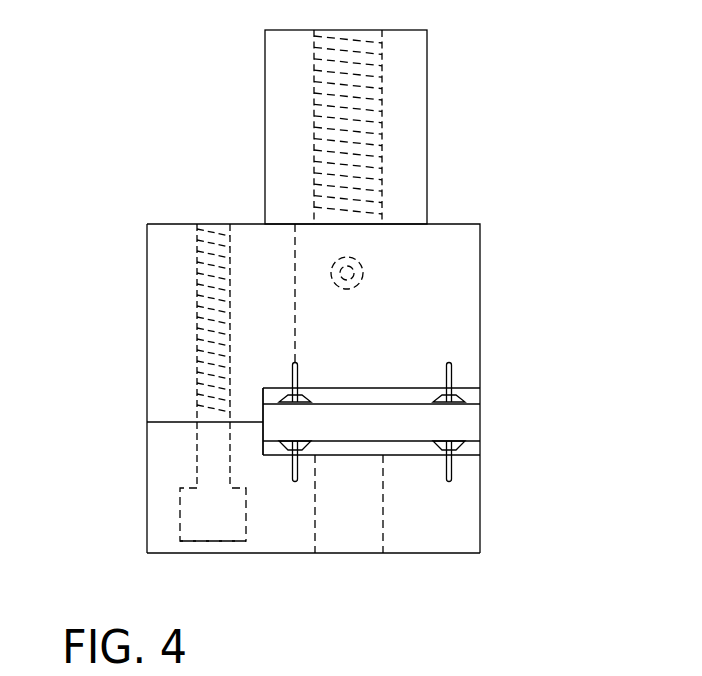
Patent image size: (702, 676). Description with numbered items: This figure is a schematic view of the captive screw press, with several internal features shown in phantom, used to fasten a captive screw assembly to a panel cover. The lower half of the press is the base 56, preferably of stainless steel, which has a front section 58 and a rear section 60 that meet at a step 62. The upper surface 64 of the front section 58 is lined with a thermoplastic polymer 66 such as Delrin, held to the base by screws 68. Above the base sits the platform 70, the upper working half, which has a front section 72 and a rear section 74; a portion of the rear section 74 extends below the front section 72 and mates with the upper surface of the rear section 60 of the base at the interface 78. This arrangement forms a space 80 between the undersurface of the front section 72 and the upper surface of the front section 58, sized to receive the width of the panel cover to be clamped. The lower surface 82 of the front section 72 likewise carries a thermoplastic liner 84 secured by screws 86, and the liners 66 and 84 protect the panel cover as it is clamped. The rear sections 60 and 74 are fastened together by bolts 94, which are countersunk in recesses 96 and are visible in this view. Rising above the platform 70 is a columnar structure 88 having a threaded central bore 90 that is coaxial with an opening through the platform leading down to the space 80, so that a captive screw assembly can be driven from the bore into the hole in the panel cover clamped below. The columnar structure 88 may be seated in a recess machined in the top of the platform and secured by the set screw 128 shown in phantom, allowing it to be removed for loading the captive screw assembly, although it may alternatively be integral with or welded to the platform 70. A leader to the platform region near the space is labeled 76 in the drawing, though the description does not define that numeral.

The base 56 is at (148, 513).
The front section 58 is at (423, 545).
The rear section 60 is at (148, 488).
The step 62 is at (262, 440).
The upper surface 64 is at (417, 455).
The thermoplastic polymer 66 is at (372, 455).
The screws 68 is at (297, 482).
The platform 70 is at (148, 283).
The front section 72 is at (465, 243).
The rear section 74 is at (242, 230).
The plate assembly 76 is at (263, 412).
The interface 78 is at (180, 422).
The space 80 is at (465, 427).
The lower surface 82 is at (397, 388).
The liner 84 is at (413, 401).
The screws 86 is at (298, 378).
The columnar structure 88 is at (427, 173).
The threaded central bore 90 is at (383, 83).
The bolts 94 is at (180, 523).
The recesses 96 is at (193, 545).
The set screw 128 is at (363, 281).